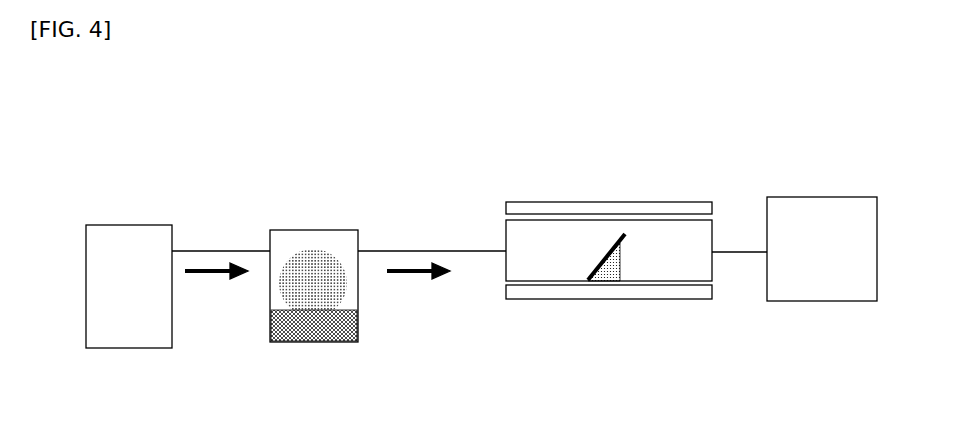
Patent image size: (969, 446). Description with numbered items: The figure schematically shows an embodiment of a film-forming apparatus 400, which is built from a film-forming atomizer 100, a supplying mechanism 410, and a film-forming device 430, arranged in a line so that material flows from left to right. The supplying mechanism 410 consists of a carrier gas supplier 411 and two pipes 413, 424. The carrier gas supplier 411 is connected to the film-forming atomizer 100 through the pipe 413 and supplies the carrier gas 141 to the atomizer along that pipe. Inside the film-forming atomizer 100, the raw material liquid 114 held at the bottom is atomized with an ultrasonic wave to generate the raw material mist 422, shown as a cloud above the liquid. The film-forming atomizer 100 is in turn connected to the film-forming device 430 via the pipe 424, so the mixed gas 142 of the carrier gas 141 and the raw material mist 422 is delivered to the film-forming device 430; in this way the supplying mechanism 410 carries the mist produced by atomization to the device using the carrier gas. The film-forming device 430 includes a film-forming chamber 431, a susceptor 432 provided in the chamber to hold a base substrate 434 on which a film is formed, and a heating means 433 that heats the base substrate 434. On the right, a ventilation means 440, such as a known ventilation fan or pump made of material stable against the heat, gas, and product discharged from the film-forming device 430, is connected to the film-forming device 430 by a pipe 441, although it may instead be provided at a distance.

The film-forming apparatus 400 is at (84, 107).
The supplying mechanism 410 is at (463, 163).
The carrier gas supplier 411 is at (120, 247).
The pipe 413 is at (223, 250).
The pipe 424 is at (425, 250).
The carrier gas 141 is at (216, 290).
The mixed gas 142 is at (418, 289).
The film-forming atomizer 100 is at (270, 305).
The raw material mist 422 is at (327, 304).
The raw material liquid 114 is at (295, 342).
The film-forming device 430 is at (770, 380).
The film-forming chamber 431 is at (663, 262).
The susceptor 432 is at (614, 283).
The heating means 433 is at (557, 203).
The base substrate 434 is at (614, 236).
The pipe 441 is at (733, 252).
The ventilation means 440 is at (830, 217).